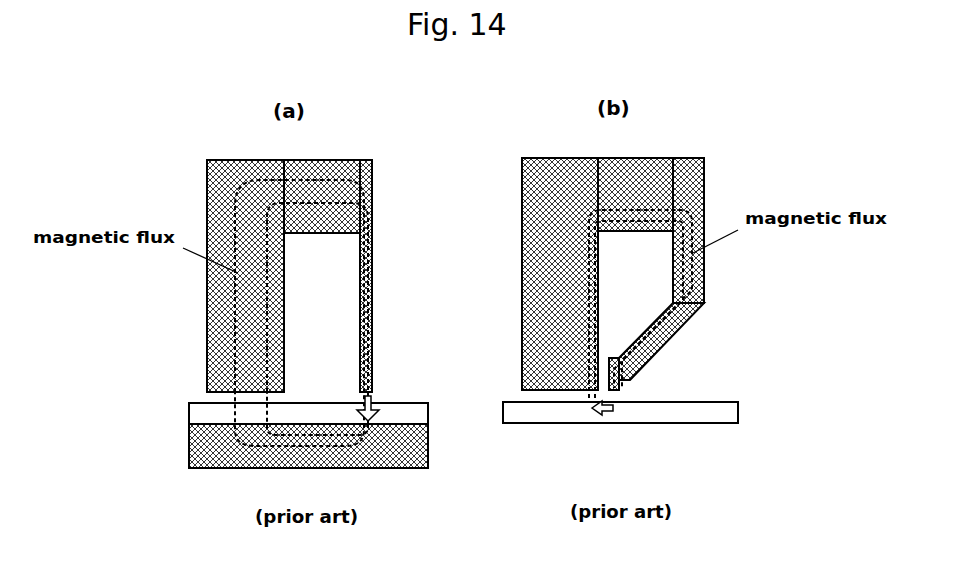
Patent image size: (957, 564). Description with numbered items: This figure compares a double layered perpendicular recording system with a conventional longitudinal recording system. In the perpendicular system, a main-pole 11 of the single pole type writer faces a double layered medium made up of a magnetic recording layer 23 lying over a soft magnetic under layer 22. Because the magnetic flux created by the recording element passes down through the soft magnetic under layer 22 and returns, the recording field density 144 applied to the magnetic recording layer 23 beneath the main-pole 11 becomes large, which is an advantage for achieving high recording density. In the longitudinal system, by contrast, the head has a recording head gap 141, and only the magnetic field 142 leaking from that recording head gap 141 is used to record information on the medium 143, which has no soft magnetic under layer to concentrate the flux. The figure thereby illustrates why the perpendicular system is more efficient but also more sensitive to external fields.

The main-pole 11 is at (372, 318).
The soft magnetic under layer 22 is at (212, 457).
The magnetic recording layer 23 is at (200, 415).
The recording field density 144 is at (368, 420).
The recording head gap 141 is at (605, 382).
The magnetic field 142 is at (602, 413).
The medium 143 is at (728, 412).